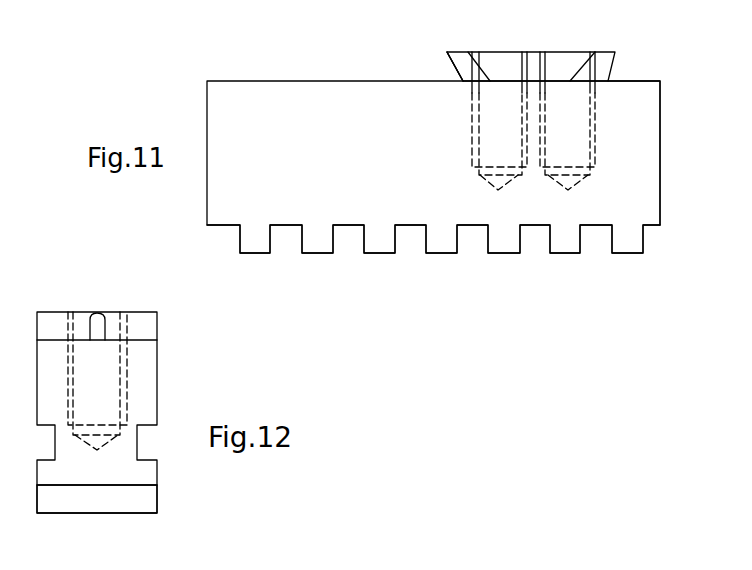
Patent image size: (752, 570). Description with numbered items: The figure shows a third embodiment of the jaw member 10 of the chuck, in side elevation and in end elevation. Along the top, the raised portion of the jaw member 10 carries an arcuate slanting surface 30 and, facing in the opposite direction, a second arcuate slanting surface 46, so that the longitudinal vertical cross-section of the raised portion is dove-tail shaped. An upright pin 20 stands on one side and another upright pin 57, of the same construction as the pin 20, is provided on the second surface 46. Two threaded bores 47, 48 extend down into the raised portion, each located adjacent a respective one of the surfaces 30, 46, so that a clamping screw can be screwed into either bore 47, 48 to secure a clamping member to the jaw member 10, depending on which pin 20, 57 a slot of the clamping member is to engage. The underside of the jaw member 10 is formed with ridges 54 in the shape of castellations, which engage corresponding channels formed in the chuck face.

In FIG. 11, the jaw member 10 is at (223, 77).
In FIG. 11, the upright pin 20 is at (615, 67).
In FIG. 11, the arcuate slanting surface 30 is at (616, 54).
In FIG. 11, the second arcuate slanting surface 46 is at (449, 53).
In FIG. 12, the second arcuate slanting surface 46 is at (143, 328).
In FIG. 11, the threaded bore 47 is at (548, 72).
In FIG. 11, the threaded bore 48 is at (484, 66).
In FIG. 12, the threaded bore 48 is at (118, 390).
In FIG. 11, the ridges 54 is at (368, 245).
In FIG. 12, the ridges 54 is at (93, 503).
In FIG. 11, the upright pin 57 is at (448, 70).
In FIG. 12, the upright pin 57 is at (98, 312).